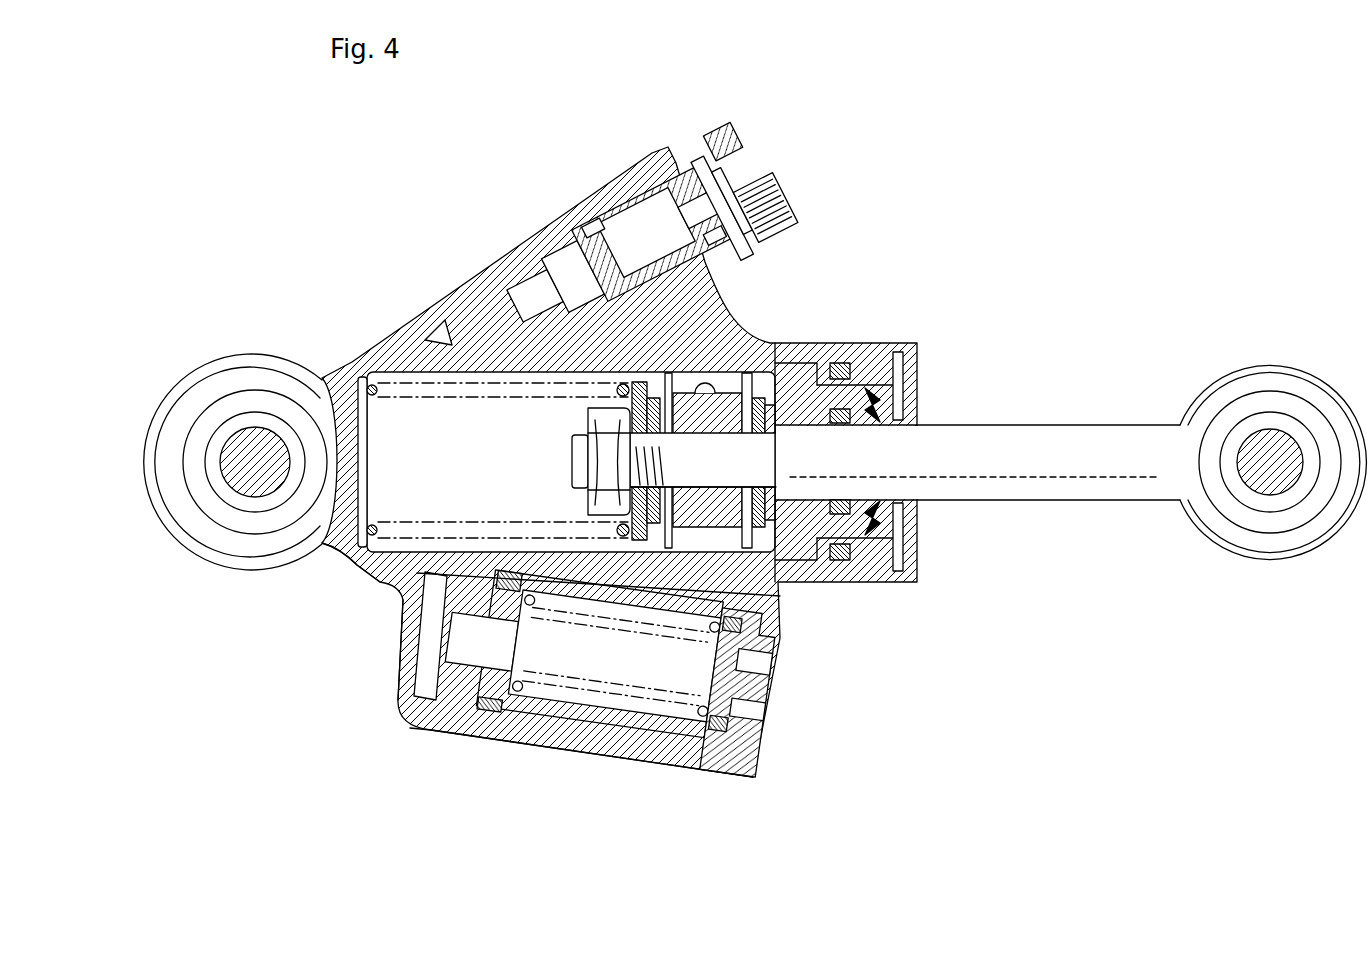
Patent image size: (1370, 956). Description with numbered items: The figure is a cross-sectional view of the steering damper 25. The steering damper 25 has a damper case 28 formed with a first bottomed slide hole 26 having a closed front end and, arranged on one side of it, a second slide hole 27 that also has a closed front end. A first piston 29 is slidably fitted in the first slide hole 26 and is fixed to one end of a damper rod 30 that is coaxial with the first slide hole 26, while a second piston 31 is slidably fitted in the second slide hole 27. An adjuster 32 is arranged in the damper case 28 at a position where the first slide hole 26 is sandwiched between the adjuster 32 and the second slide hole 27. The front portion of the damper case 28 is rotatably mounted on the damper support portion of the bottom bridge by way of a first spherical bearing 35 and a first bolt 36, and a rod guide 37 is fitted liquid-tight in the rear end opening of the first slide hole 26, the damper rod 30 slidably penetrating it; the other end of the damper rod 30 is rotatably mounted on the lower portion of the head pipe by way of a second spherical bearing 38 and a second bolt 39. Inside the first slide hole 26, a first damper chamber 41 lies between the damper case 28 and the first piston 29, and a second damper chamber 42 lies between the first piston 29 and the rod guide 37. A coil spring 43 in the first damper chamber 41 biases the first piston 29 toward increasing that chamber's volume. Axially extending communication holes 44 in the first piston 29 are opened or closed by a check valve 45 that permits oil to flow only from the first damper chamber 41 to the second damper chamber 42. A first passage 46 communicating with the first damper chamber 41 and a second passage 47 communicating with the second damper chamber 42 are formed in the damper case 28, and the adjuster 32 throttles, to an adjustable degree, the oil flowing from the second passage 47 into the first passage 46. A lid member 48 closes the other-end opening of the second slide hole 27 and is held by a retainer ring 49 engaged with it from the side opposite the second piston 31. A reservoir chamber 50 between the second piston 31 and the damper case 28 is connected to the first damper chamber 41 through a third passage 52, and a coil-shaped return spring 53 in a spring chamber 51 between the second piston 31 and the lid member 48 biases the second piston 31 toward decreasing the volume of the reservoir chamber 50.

The steering damper 25 is at (778, 346).
The first slide hole 26 is at (432, 370).
The second slide hole 27 is at (565, 713).
The damper case 28 is at (387, 578).
The first piston 29 is at (625, 575).
The damper rod 30 is at (1035, 437).
The second piston 31 is at (460, 700).
The adjuster 32 is at (561, 236).
The first spherical bearing 35 is at (252, 397).
The first bolt 36 is at (248, 482).
The rod guide 37 is at (873, 370).
The second spherical bearing 38 is at (1267, 402).
The second bolt 39 is at (1268, 490).
The first damper chamber 41 is at (566, 462).
The second damper chamber 42 is at (818, 360).
The coil spring 43 is at (375, 392).
The communication holes 44 is at (715, 378).
The check valve 45 is at (757, 395).
The first passage 46 is at (443, 346).
The second passage 47 is at (563, 347).
The lid member 48 is at (762, 702).
The retainer ring 49 is at (753, 745).
The reservoir chamber 50 is at (420, 673).
The spring chamber 51 is at (598, 693).
The third passage 52 is at (372, 570).
The return spring 53 is at (715, 692).